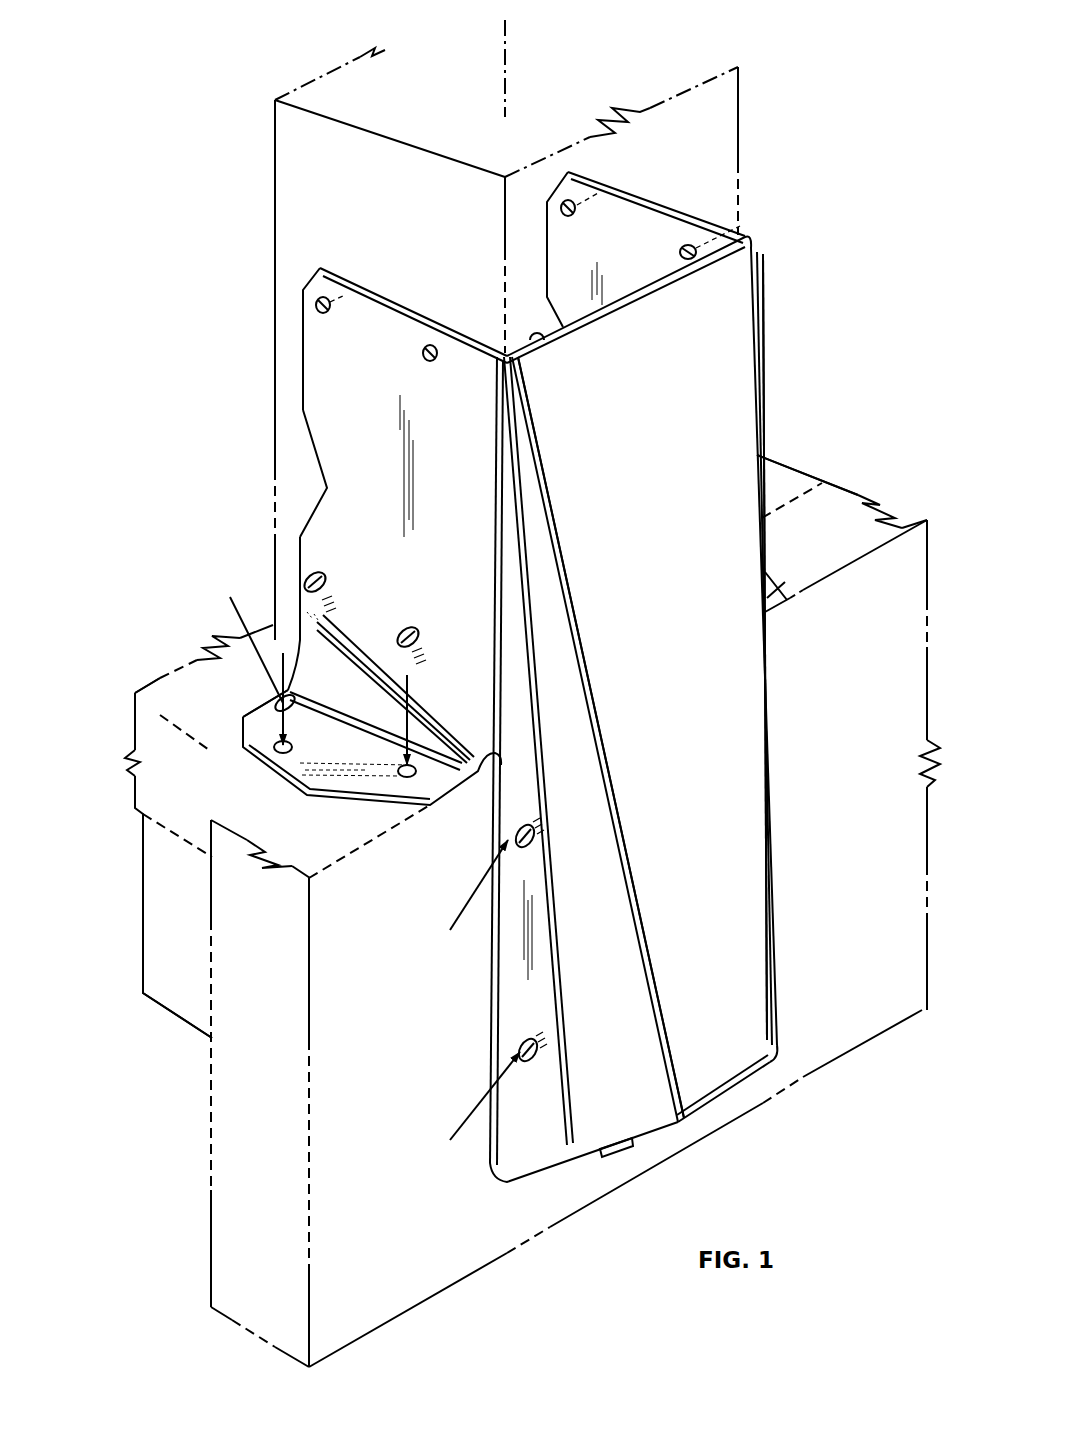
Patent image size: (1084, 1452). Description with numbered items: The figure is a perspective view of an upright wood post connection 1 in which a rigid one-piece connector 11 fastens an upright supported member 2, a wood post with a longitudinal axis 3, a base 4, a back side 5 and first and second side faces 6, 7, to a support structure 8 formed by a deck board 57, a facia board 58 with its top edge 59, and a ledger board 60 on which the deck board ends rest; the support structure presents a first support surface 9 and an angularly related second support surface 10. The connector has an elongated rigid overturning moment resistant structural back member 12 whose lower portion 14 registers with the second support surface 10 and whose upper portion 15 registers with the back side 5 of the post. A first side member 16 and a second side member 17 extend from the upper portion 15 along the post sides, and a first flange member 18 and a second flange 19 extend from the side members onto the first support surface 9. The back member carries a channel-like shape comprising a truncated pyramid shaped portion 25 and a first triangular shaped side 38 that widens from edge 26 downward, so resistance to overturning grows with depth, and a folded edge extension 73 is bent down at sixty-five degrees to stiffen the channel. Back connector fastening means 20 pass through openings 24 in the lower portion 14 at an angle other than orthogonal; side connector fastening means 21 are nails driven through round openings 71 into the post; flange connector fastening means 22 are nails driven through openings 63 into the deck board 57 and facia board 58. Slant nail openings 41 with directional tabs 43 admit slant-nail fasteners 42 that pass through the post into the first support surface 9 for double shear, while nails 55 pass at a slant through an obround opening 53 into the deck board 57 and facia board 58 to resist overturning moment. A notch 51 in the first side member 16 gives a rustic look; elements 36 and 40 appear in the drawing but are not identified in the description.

The upright wood post connection 1 is at (797, 224).
The upright supported member 2 is at (742, 94).
The longitudinal axis 3 is at (508, 88).
The base 4 is at (273, 640).
The back side 5 is at (724, 124).
The first side face 6 is at (399, 231).
The second side face 7 is at (737, 58).
The support structure 8 is at (127, 860).
The first support surface 9 is at (210, 705).
The second support surface 10 is at (370, 1011).
The rigid one-piece connector 11 is at (668, 202).
The elongated rigid overturning moment resistant structural back member 12 is at (757, 337).
The lower portion 14 is at (732, 1062).
The upper portion 15 is at (662, 396).
The first side member 16 is at (400, 303).
The second side member 17 is at (632, 200).
The first flange member 18 is at (332, 782).
The second flange 19 is at (770, 590).
The back connector fastening means 20 is at (450, 930).
The side connector fastening means 21 is at (318, 308).
The flange connector fastening means 22 is at (290, 720).
The openings 24 is at (517, 823).
The truncated pyramid shaped portion 25 is at (680, 632).
The edge 26 is at (541, 343).
The front strip 36 is at (520, 943).
The first triangular shaped side 38 is at (609, 957).
The strip bolt heads 40 is at (535, 840).
The slant nail openings 41 is at (330, 572).
The slant-nail fasteners 42 is at (310, 568).
The directional tab 43 is at (310, 585).
The notch 51 is at (300, 440).
The obround opening 53 is at (260, 710).
The nails 55 is at (225, 640).
The deck board 57 is at (150, 680).
The facia board 58 is at (912, 520).
The top edge 59 is at (842, 539).
The ledger board 60 is at (173, 1000).
The openings 63 is at (400, 770).
The openings 71 is at (333, 312).
The folded edge extension 73 is at (620, 1148).